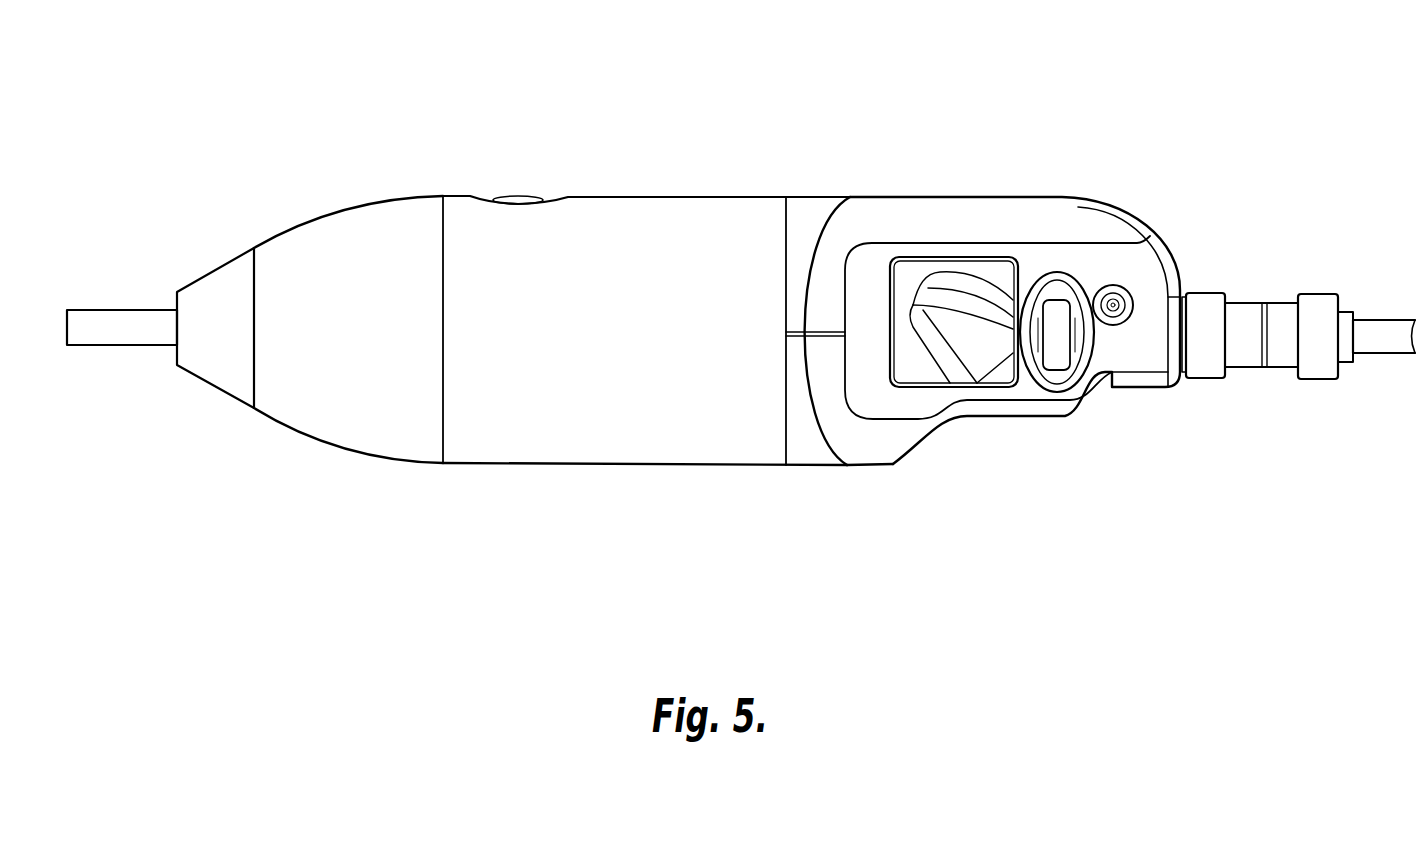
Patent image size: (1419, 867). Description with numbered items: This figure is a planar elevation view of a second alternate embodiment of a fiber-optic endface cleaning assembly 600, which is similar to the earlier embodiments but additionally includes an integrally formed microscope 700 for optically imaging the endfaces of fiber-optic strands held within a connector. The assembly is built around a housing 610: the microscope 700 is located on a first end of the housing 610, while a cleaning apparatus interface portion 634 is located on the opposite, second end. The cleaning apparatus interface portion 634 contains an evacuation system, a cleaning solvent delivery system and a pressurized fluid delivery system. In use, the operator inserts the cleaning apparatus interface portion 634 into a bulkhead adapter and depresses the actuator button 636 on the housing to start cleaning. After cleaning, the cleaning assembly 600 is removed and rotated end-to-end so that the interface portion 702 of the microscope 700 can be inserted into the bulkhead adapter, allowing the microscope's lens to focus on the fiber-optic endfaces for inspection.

The fiber-optic endface cleaning assembly 600 is at (630, 139).
The housing 610 is at (618, 466).
The cleaning apparatus interface portion 634 is at (118, 310).
The actuator button 636 is at (517, 195).
The microscope 700 is at (970, 197).
The interface portion 702 is at (1378, 320).